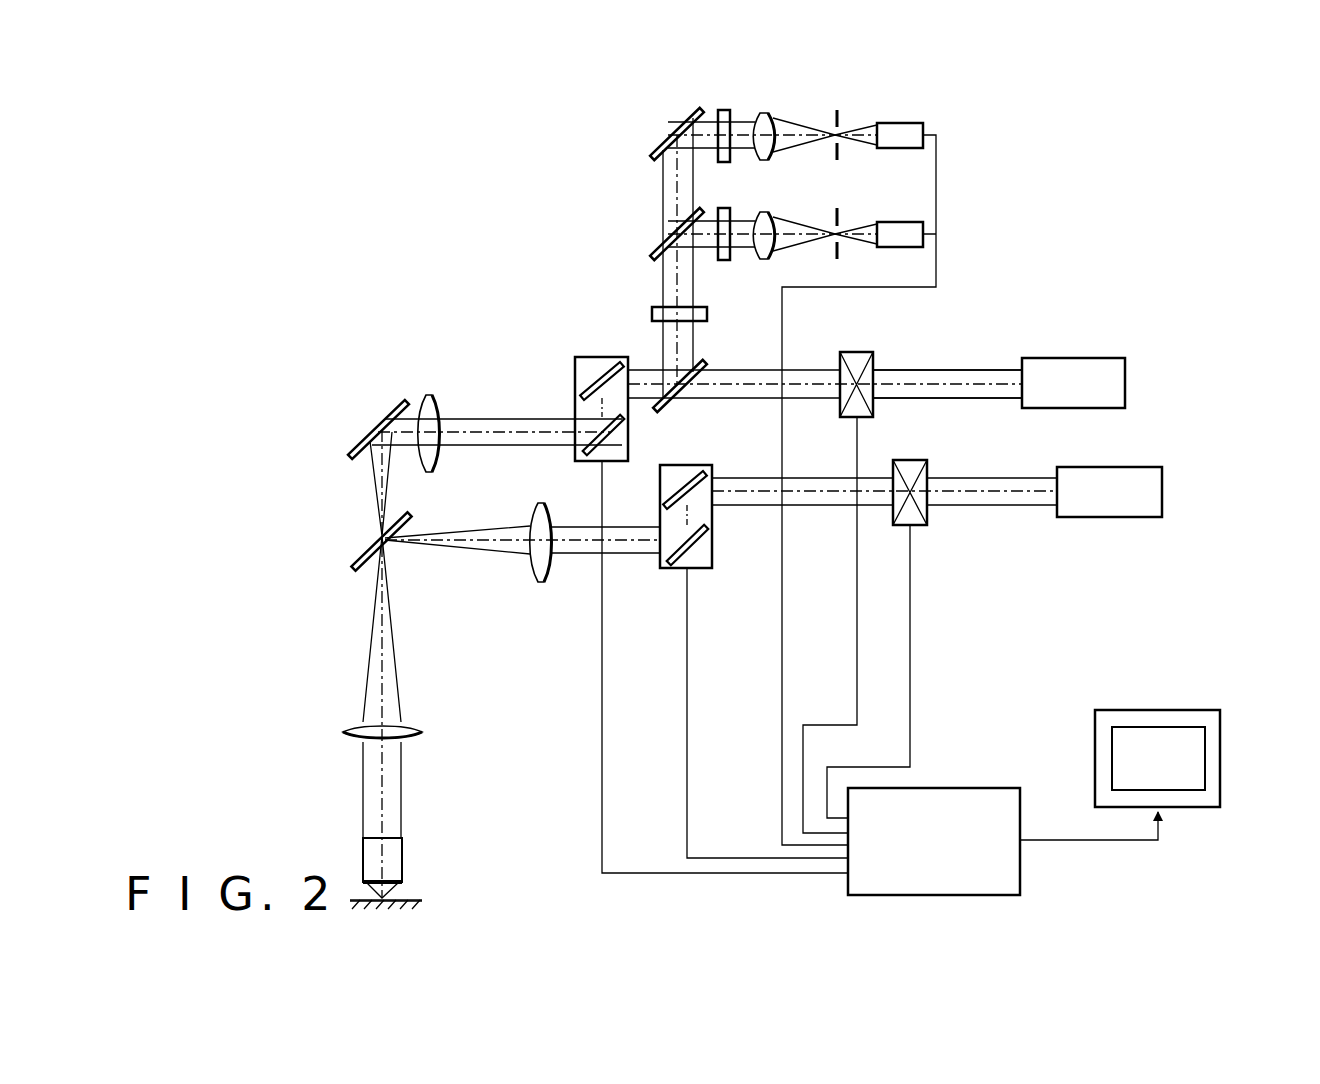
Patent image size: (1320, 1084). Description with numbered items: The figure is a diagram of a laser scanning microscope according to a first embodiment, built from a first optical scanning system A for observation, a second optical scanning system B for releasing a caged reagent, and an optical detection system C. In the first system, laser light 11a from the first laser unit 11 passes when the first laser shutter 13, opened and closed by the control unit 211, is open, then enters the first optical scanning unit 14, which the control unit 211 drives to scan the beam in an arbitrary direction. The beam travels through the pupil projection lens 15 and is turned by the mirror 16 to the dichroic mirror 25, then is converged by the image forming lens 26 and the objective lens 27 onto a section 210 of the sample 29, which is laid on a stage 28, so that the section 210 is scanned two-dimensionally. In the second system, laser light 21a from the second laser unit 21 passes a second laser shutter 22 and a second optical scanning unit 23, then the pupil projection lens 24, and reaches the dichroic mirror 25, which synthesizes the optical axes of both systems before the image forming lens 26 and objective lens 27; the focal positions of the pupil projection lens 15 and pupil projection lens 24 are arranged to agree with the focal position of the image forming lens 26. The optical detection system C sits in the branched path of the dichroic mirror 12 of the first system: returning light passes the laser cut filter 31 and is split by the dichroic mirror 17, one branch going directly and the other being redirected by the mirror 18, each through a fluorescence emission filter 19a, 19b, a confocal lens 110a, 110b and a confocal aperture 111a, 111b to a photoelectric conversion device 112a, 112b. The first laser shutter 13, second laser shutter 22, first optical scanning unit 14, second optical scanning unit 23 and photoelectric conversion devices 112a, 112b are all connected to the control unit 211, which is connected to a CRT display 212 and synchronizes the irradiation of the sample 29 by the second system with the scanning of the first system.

The first laser unit 11 is at (1076, 358).
The laser light 11a is at (967, 367).
The dichroic mirror 12 is at (660, 414).
The first laser shutter 13 is at (857, 352).
The first optical scanning unit 14 is at (588, 357).
The pupil projection lens 15 is at (427, 395).
The mirror 16 is at (362, 442).
The dichroic mirror 17 is at (655, 248).
The mirror 18 is at (670, 130).
The fluorescence emission filter 19a is at (722, 208).
The fluorescence emission filter 19b is at (722, 110).
The confocal lens 110a is at (766, 212).
The confocal lens 110b is at (765, 113).
The confocal aperture 111a is at (840, 208).
The confocal aperture 111b is at (838, 110).
The photoelectric conversion device 112a is at (925, 222).
The photoelectric conversion device 112b is at (915, 123).
The second laser unit 21 is at (1137, 467).
The laser light 21a is at (1027, 475).
The second laser shutter 22 is at (911, 460).
The second optical scanning unit 23 is at (706, 570).
The pupil projection lens 24 is at (540, 582).
The dichroic mirror 25 is at (362, 550).
The image forming lens 26 is at (343, 731).
The objective lens 27 is at (362, 852).
The stage 28 is at (362, 903).
The sample 29 is at (372, 893).
The section 210 is at (413, 893).
The control unit 211 is at (1022, 873).
The CRT display 212 is at (1222, 742).
The laser cut filter 31 is at (653, 311).